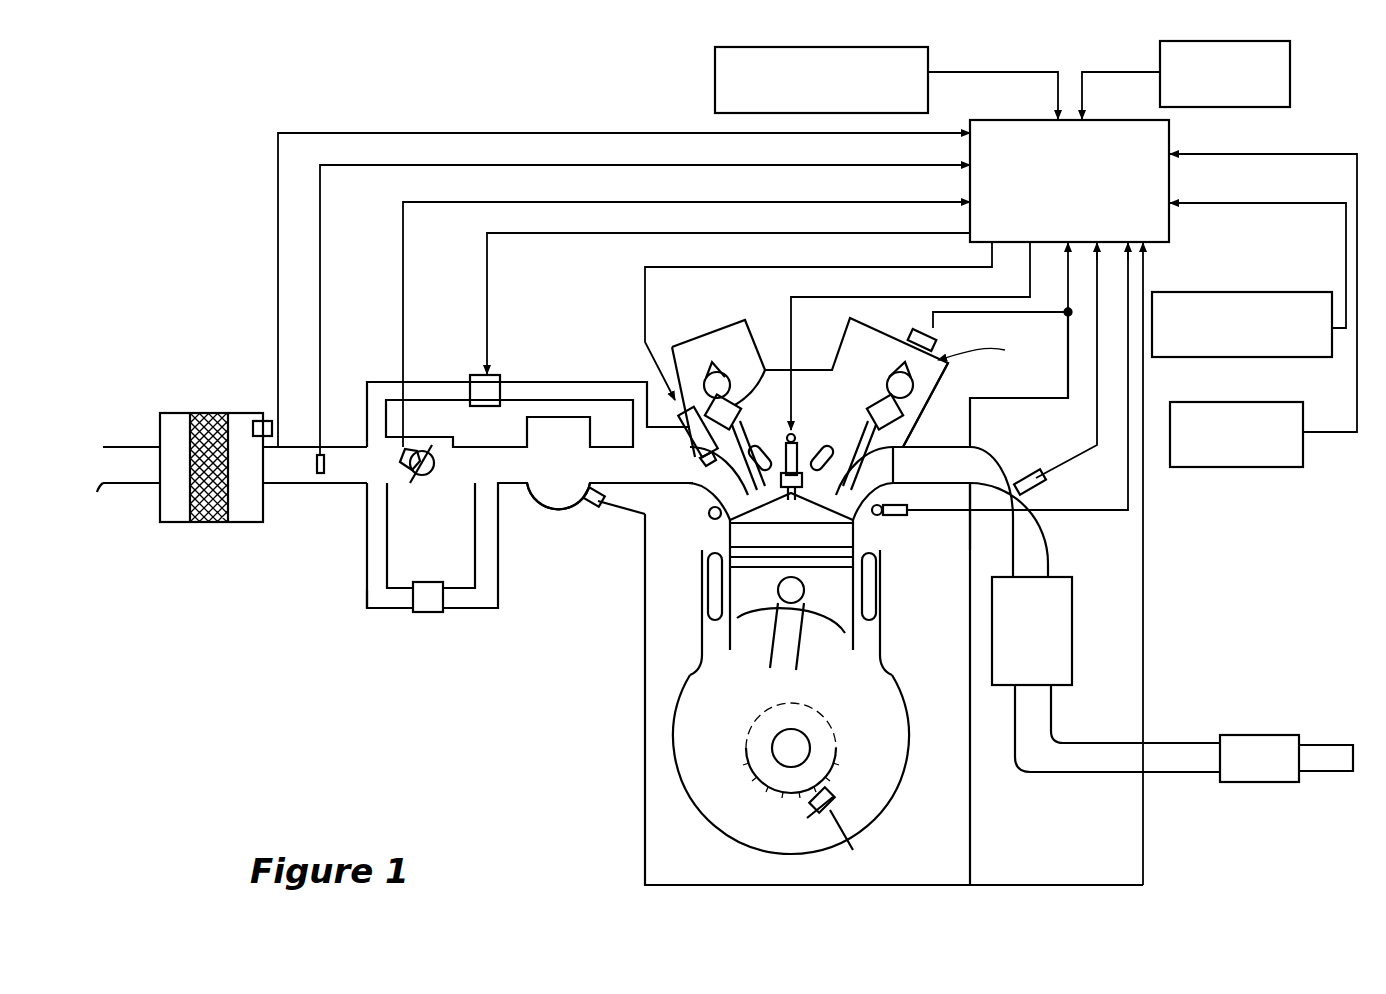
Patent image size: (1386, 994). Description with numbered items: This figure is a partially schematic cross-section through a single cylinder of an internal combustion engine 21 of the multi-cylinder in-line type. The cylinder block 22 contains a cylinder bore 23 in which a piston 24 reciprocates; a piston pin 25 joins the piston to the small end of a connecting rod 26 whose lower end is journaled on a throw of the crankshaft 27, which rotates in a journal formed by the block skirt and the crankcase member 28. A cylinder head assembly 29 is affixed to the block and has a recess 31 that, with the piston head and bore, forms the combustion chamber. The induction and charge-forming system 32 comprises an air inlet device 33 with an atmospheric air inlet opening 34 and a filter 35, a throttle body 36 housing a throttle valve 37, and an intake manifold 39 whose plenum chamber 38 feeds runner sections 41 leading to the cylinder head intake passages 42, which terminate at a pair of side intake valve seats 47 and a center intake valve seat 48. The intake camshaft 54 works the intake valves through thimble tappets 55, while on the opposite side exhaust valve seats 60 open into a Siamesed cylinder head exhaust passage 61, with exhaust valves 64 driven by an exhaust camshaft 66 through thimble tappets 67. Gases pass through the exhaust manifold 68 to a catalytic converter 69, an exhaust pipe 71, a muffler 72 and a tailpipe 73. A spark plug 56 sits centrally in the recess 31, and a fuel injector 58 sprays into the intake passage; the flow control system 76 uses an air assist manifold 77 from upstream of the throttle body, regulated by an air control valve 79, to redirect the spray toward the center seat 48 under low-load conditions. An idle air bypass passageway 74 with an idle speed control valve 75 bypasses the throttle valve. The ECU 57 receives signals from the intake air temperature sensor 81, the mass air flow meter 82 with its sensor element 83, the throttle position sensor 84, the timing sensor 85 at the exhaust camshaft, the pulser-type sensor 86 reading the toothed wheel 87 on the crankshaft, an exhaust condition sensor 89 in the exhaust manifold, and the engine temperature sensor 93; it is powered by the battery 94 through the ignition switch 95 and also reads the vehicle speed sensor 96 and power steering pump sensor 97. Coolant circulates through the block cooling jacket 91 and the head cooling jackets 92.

The internal combustion engine 21 is at (535, 725).
The cylinder block 22 is at (882, 535).
The cylinder bore 23 is at (731, 522).
The piston 24 is at (750, 627).
The piston pin 25 is at (777, 592).
The connecting rod 26 is at (797, 650).
The crankshaft 27 is at (790, 750).
The crankcase member 28 is at (920, 810).
The cylinder head assembly 29 is at (962, 350).
The combustion chamber recess 31 is at (863, 602).
The induction and charge-forming system 32 is at (299, 635).
The air inlet device 33 is at (166, 396).
The atmospheric air inlet opening 34 is at (103, 447).
The filter 35 is at (193, 522).
The throttle body 36 is at (425, 496).
The throttle valve 37 is at (428, 447).
The plenum chamber 38 is at (545, 515).
The intake manifold 39 is at (576, 414).
The runner section 41 is at (610, 445).
The cylinder head intake passage 42 is at (707, 479).
The side intake valve seat 47 is at (735, 554).
The center intake valve seat 48 is at (791, 620).
The intake camshaft 54 is at (717, 362).
The thimble tappet 55 is at (765, 368).
The spark plug 56 is at (798, 440).
The ECU 57 is at (1032, 119).
The fuel injector 58 is at (680, 420).
The exhaust valve seat 60 is at (808, 515).
The cylinder head exhaust passage 61 is at (972, 527).
The exhaust valve 64 is at (883, 441).
The exhaust camshaft 66 is at (893, 375).
The thimble tappet 67 is at (876, 405).
The exhaust manifold 68 is at (1045, 499).
The catalytic converter 69 is at (1073, 631).
The exhaust pipe 71 is at (1162, 742).
The muffler 72 is at (1256, 734).
The tailpipe 73 is at (1325, 744).
The idle air bypass passageway 74 is at (380, 609).
The idle speed control valve 75 is at (428, 613).
The flow control system 76 is at (690, 425).
The air assist manifold 77 is at (558, 382).
The air control valve 79 is at (500, 378).
The intake air temperature sensor 81 is at (256, 421).
The mass air flow meter 82 is at (311, 487).
The sensor element 83 is at (315, 458).
The throttle position sensor 84 is at (414, 450).
The timing sensor 85 is at (915, 327).
The pulser-type sensor 86 is at (815, 815).
The toothed wheel 87 is at (846, 770).
The exhaust oxygen sensor 89 is at (1032, 466).
The cooling jacket 91 is at (880, 634).
The cooling jackets 92 is at (830, 448).
The engine temperature sensor 93 is at (905, 518).
The battery 94 is at (712, 77).
The ignition switch 95 is at (1232, 468).
The vehicle speed sensor 96 is at (1290, 70).
The power steering pump sensor 97 is at (1210, 292).